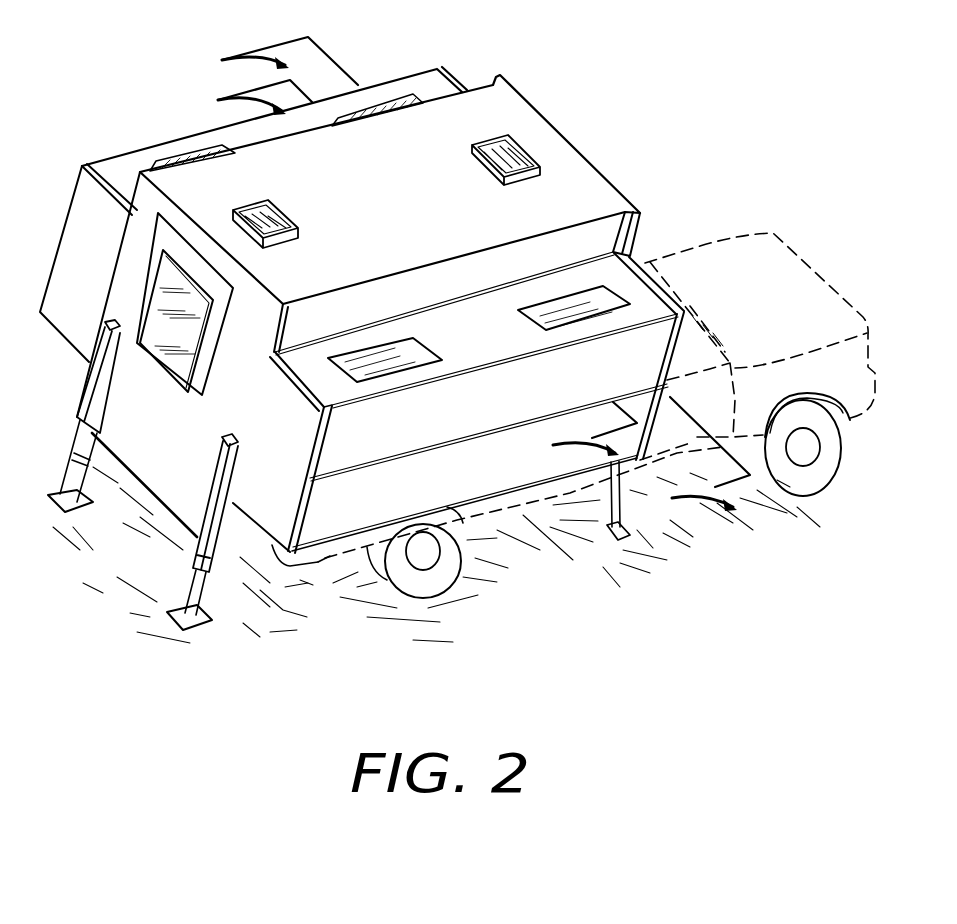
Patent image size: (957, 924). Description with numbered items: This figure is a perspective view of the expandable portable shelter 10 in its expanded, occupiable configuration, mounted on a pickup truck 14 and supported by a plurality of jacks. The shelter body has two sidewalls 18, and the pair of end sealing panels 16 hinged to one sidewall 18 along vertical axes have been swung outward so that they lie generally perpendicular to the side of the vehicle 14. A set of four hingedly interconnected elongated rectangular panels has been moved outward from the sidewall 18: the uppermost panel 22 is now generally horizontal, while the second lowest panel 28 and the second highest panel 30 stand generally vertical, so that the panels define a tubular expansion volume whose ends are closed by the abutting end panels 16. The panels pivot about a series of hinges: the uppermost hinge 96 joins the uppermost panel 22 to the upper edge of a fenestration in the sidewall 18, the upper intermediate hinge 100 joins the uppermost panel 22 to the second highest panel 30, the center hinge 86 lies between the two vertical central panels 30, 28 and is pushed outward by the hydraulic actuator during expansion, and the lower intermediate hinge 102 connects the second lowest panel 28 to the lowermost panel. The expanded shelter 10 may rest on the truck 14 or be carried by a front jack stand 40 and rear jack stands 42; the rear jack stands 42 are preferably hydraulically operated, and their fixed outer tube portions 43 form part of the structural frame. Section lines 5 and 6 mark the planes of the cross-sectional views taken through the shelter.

The section line 5- 5 is at (473, 284).
The section line 6- 6 is at (416, 277).
The expandable portable shelter 10 is at (362, 383).
The pickup truck 14 is at (770, 316).
The end sealing panels 16 is at (102, 272).
The sidewall 18 is at (395, 215).
The uppermost panel 22 is at (512, 350).
The second lowest panel 28 is at (491, 489).
The second highest panel 30 is at (515, 416).
The front jack stand 40 is at (612, 522).
The rear jack stands 42 is at (83, 478).
The fixed outer tube portions 43 is at (215, 560).
The center hinge 86 is at (411, 447).
The uppermost hinge 96 is at (376, 296).
The upper intermediate hinge 100 is at (540, 349).
The lower intermediate hinge 102 is at (327, 537).